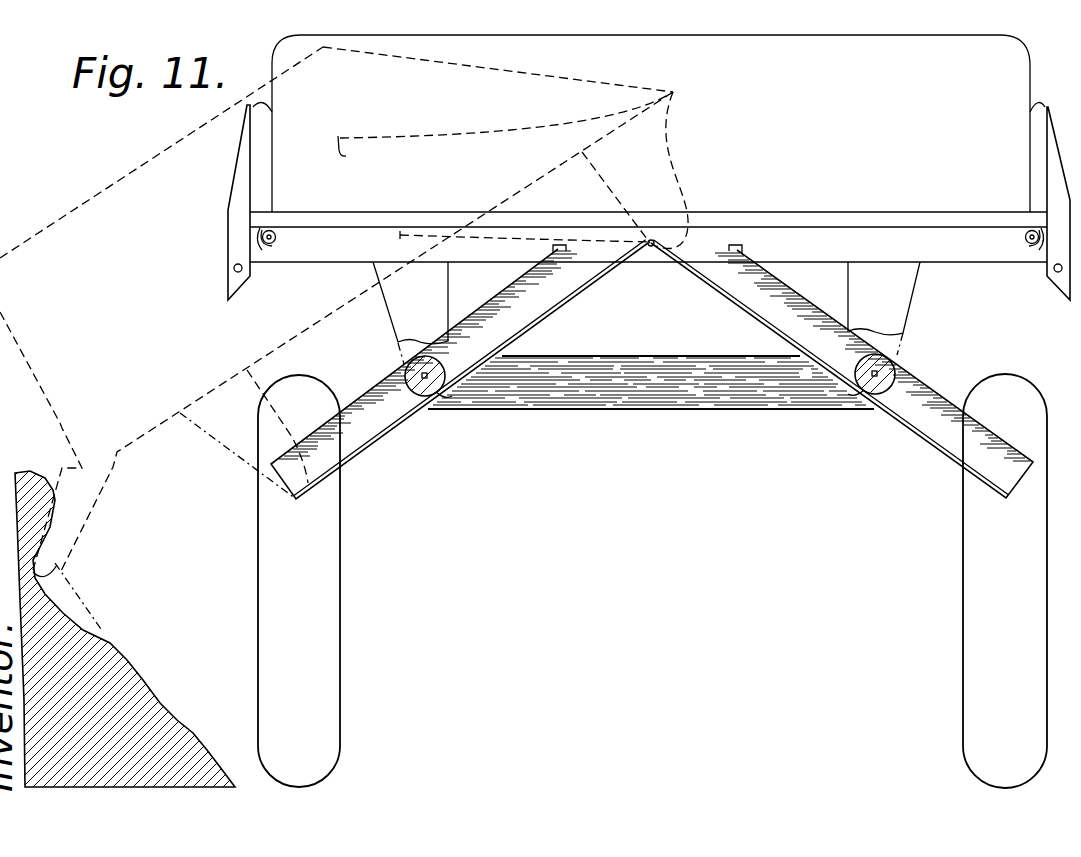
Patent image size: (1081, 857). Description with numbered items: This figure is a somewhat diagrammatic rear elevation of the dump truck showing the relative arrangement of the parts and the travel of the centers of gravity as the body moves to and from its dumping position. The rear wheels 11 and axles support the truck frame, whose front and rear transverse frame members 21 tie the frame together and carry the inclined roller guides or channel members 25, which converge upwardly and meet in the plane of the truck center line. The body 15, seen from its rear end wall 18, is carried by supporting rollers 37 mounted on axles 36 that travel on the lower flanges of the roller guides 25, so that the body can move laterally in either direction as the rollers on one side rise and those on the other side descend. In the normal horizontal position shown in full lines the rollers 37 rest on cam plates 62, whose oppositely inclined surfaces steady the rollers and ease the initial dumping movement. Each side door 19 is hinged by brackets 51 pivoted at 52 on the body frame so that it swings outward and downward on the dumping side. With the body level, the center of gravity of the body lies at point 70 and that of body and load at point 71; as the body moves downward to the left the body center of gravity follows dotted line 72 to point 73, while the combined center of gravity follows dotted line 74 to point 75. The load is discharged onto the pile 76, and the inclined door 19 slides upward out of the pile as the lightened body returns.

The rear wheels 11 is at (345, 537).
The body 15 is at (787, 160).
The rear end wall 18 is at (848, 38).
The side walls or dumping doors 19 is at (263, 115).
The transverse frame members 21 is at (637, 410).
The inclined roller guides or channel members 25 is at (694, 290).
The axles 36 is at (421, 397).
The supporting rollers 37 is at (405, 364).
The brackets 51 is at (262, 248).
The pivot 52 is at (272, 244).
The cam plates 62 is at (444, 390).
The center of gravity of the body 70 is at (652, 243).
The center of gravity of the combined body and load 71 is at (632, 120).
The dotted line 72 is at (527, 235).
The point 73 is at (400, 235).
The dotted line 74 is at (495, 137).
The point 75 is at (350, 153).
The pile 76 is at (108, 645).